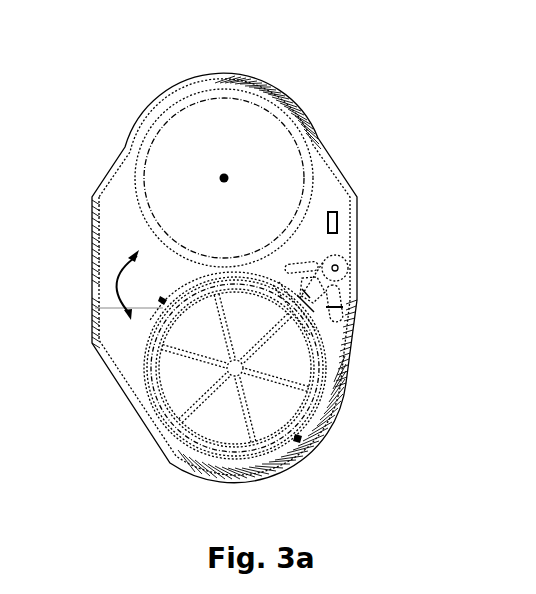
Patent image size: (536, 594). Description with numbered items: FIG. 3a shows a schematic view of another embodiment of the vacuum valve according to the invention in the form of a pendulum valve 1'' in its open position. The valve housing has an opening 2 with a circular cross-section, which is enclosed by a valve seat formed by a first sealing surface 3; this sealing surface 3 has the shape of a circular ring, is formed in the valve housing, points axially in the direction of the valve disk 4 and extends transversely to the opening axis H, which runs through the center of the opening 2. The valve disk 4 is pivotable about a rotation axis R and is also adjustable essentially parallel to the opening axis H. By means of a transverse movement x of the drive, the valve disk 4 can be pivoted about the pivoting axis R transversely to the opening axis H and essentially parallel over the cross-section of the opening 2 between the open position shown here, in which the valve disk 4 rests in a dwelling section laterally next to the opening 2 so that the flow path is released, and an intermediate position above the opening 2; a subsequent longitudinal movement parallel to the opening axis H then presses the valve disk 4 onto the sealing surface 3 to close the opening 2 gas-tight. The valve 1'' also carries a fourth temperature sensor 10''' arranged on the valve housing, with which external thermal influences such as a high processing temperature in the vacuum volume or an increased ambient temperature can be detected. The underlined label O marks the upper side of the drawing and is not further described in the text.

The pendulum valve 1'' is at (99, 26).
The upper side / orientation O is at (254, 38).
The opening 2 is at (243, 133).
The sealing surface 3 is at (170, 101).
The valve disk 4 is at (170, 387).
The opening axis H is at (224, 178).
The fourth temperature sensor 10''' is at (404, 216).
The rotation axis R is at (338, 268).
The transverse movement x is at (117, 281).